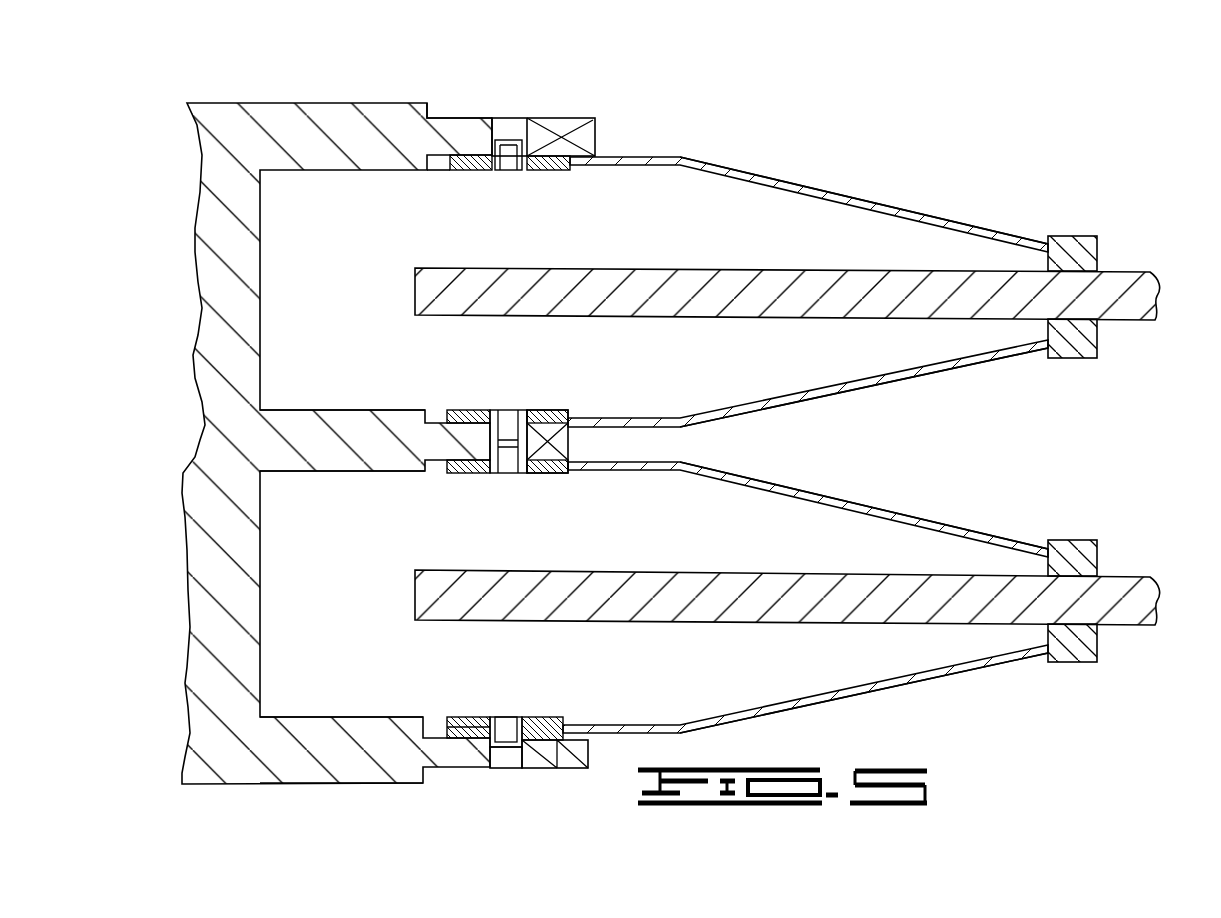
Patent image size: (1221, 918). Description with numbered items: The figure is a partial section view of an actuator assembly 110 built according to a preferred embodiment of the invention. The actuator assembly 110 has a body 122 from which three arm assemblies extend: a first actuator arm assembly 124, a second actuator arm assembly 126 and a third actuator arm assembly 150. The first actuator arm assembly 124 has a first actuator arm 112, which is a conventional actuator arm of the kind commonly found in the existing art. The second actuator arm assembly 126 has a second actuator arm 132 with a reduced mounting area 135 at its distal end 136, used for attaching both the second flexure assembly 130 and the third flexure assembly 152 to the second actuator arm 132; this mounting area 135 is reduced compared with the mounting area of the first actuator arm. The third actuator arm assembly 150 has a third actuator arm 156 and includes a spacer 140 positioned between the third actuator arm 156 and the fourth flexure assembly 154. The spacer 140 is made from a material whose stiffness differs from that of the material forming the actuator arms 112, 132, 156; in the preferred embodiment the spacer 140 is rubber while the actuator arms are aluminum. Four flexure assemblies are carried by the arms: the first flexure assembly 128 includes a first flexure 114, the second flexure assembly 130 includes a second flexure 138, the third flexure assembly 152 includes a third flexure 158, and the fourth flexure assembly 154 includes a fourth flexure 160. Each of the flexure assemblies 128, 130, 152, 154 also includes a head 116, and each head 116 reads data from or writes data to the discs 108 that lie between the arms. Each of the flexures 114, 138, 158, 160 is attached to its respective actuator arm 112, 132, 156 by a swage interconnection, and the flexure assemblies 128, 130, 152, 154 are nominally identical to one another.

The disc 108 is at (517, 272).
The actuator assembly 110 is at (982, 118).
The first actuator arm 112 is at (420, 102).
The first flexure 114 is at (898, 210).
The head 116 is at (1087, 235).
The body 122 is at (250, 104).
The first actuator arm assembly 124 is at (562, 92).
The second actuator arm assembly 126 is at (490, 390).
The first flexure assembly 128 is at (843, 165).
The second flexure assembly 130 is at (980, 390).
The second actuator arm 132 is at (300, 412).
The mounting area 135 is at (595, 128).
The distal end 136 is at (574, 485).
The second flexure 138 is at (838, 392).
The spacer 140 is at (552, 745).
The third actuator arm assembly 150 is at (439, 694).
The third flexure assembly 152 is at (926, 497).
The fourth flexure assembly 154 is at (958, 714).
The third actuator arm 156 is at (296, 720).
The third flexure 158 is at (840, 497).
The fourth flexure 160 is at (836, 703).